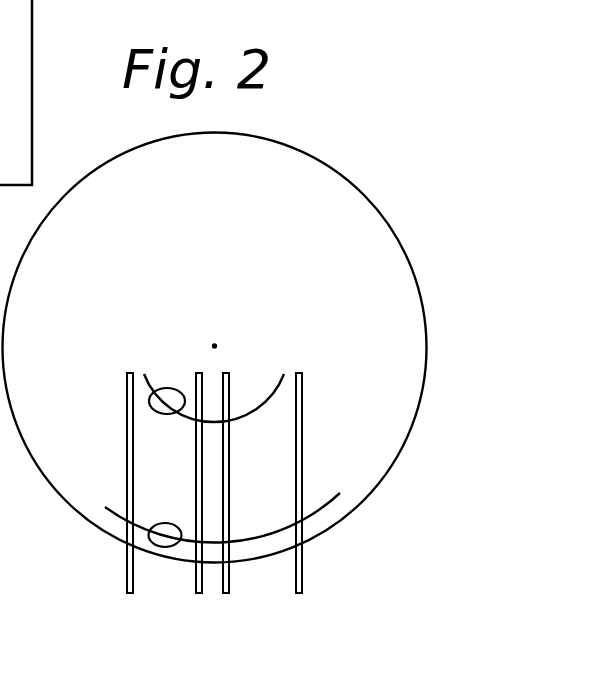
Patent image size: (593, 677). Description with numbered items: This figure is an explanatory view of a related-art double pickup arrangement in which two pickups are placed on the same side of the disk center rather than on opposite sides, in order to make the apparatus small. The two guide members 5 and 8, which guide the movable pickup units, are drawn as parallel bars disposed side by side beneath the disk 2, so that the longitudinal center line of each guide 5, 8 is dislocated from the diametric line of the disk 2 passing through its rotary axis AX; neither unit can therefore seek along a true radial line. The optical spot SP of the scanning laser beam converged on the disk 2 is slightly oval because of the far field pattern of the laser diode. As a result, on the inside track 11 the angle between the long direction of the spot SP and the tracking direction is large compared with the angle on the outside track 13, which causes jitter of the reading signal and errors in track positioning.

The disk 2 is at (410, 300).
The guide member 5 is at (202, 596).
The guide member 8 is at (303, 596).
The inside track 11 is at (151, 386).
The outside track 13 is at (107, 507).
The optical spot SP is at (172, 389).
The rotation axis AX is at (214, 346).